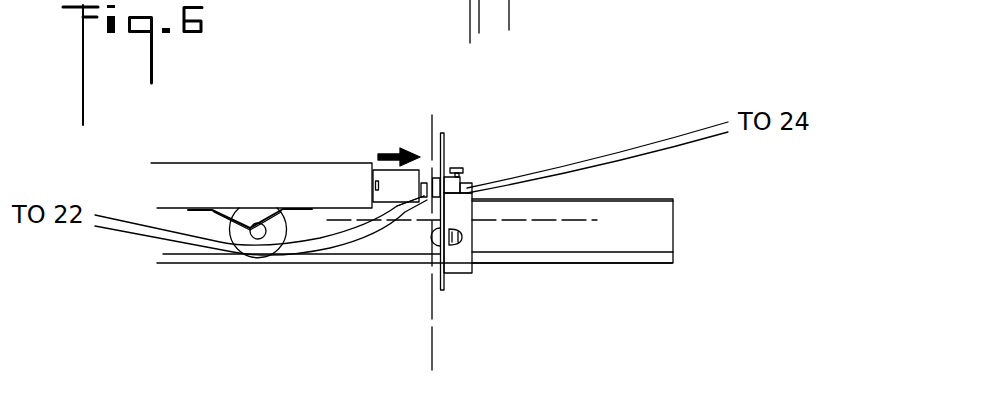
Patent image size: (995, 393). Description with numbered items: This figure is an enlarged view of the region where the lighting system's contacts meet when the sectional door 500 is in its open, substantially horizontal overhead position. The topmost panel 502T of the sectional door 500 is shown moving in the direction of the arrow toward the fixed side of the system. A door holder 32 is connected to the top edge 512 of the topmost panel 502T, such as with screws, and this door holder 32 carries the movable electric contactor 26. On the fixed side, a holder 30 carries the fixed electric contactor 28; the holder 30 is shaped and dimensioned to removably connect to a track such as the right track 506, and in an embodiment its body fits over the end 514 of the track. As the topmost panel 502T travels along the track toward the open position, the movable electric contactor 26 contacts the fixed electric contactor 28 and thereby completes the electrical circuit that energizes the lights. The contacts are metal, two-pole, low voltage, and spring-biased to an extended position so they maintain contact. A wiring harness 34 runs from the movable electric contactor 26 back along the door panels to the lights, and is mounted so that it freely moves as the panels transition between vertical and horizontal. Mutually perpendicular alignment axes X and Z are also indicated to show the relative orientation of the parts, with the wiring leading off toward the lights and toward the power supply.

The sectional door 500 is at (233, 130).
The topmost panel 502T is at (240, 183).
The top edge 512 is at (377, 163).
The fixed electric contactor 28 is at (443, 108).
The holder 30 is at (474, 139).
The right track 506 is at (642, 213).
The end of track 514 is at (675, 246).
The door holder 32 is at (401, 204).
The movable electric contactor 26 is at (428, 205).
The wiring harness 34 is at (128, 229).
The alignment axis Z is at (432, 120).
The alignment axis X is at (578, 220).